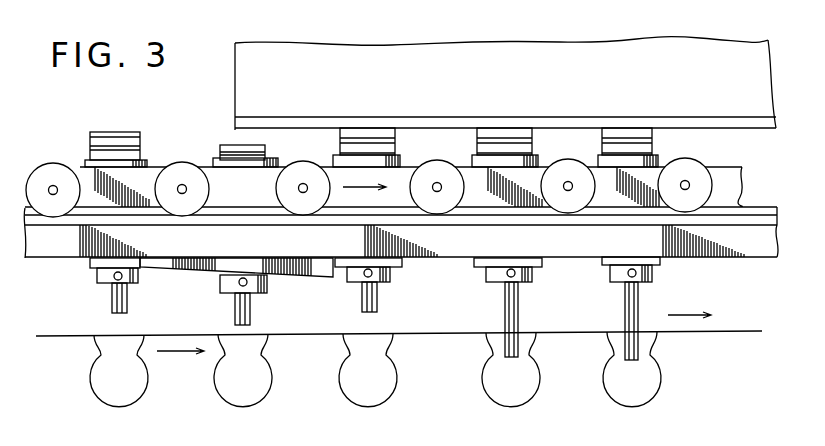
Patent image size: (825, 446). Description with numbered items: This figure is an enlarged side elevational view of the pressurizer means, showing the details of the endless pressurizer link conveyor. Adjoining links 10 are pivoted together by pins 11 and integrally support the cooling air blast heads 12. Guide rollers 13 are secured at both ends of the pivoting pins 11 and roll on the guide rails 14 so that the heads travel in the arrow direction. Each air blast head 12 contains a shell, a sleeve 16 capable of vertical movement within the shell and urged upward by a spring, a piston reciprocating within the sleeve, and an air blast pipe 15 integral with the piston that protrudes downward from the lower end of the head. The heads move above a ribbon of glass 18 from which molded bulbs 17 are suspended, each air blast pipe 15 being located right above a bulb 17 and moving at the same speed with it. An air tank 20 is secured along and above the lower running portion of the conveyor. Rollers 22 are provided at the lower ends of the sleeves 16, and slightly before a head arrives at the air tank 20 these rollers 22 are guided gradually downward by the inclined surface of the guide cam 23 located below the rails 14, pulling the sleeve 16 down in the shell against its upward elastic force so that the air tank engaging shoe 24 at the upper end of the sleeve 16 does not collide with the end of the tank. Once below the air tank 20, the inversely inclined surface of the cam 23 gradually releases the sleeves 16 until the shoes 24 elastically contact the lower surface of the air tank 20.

The pressurizer link conveyor links 10 is at (82, 172).
The pins 11 is at (177, 190).
The cooling air blast head 12 is at (215, 160).
The guide rollers 13 is at (170, 172).
The guide rails 14 is at (774, 215).
The air blast pipe 15 is at (112, 306).
The sleeve 16 is at (97, 279).
The molded bulbs 17 is at (214, 386).
The ribbon of glass 18 is at (300, 337).
The air tank 20 is at (557, 44).
The rollers 22 is at (121, 280).
The guide cam 23 is at (208, 258).
The air tank engaging shoe 24 is at (106, 131).